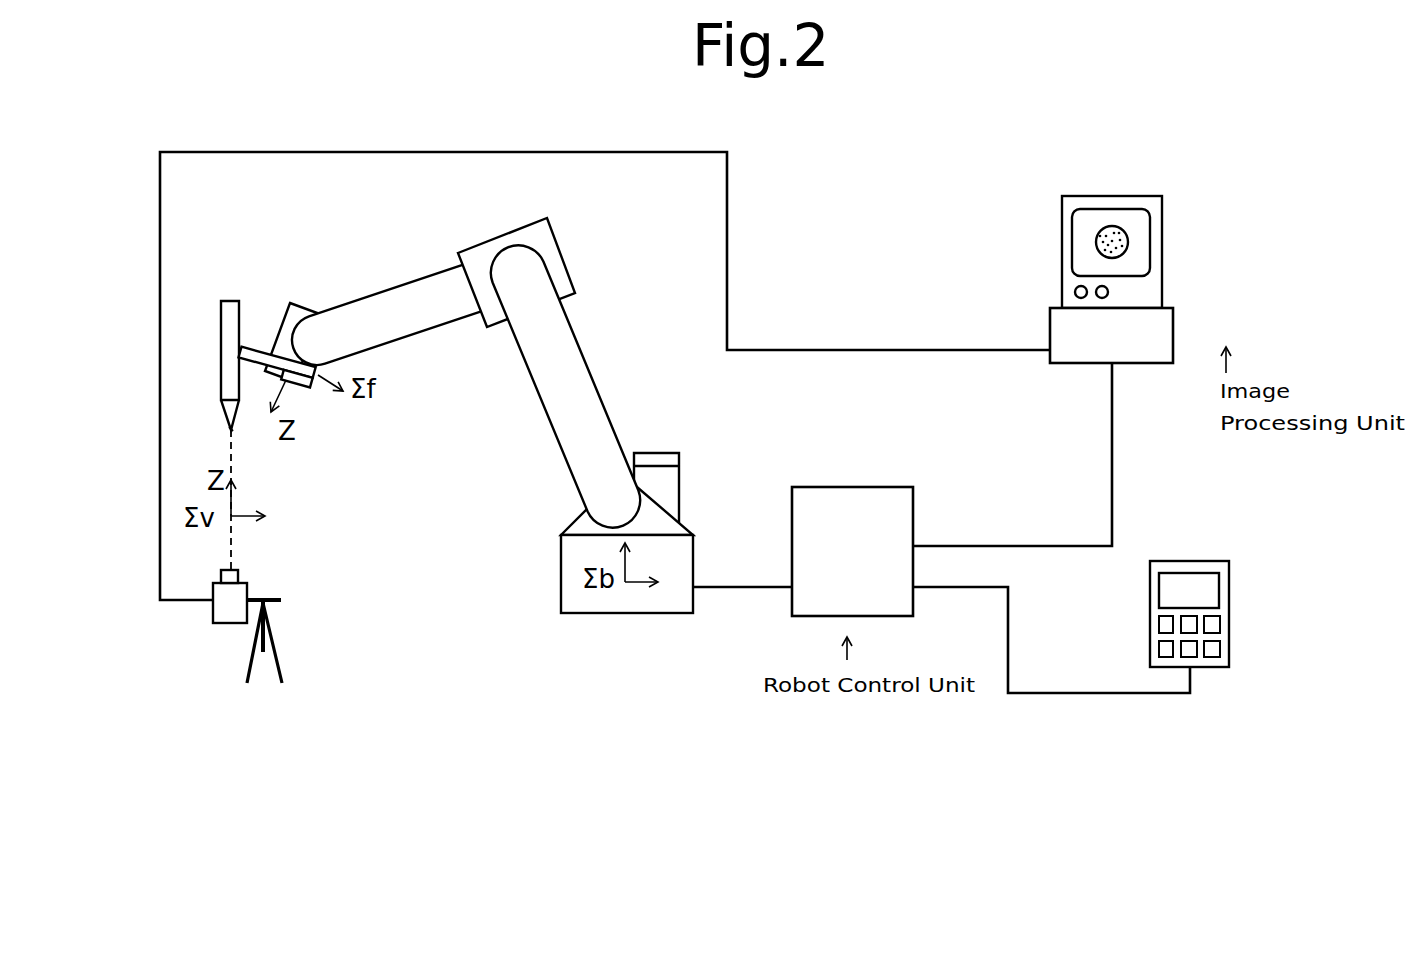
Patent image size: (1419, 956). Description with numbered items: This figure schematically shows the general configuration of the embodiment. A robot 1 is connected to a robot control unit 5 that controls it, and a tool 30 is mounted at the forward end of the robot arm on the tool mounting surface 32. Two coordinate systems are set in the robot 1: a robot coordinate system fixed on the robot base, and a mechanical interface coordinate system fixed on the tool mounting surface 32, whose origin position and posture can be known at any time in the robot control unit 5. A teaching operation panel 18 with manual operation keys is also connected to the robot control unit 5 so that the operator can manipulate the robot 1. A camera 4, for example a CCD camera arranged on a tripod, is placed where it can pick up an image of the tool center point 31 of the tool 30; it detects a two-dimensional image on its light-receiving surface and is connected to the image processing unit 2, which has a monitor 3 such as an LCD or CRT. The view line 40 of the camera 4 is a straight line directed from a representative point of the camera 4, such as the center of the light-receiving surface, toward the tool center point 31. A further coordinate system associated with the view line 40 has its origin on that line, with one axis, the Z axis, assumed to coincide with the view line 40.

The robot 1 is at (578, 367).
The image processing unit 2 is at (1162, 340).
The monitor 3 is at (1143, 245).
The camera 4 is at (227, 623).
The robot control unit 5 is at (862, 492).
The teaching operation panel 18 is at (1198, 561).
The tool 30 is at (227, 305).
The tool center point 31 is at (232, 430).
The tool mounting surface 32 is at (296, 394).
The view line 40 is at (232, 540).